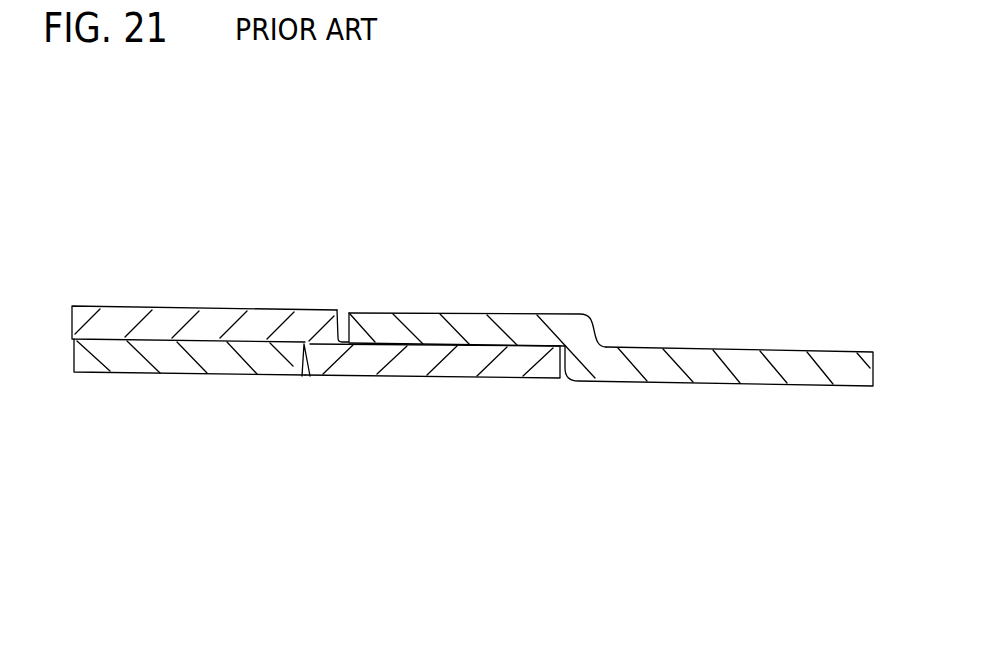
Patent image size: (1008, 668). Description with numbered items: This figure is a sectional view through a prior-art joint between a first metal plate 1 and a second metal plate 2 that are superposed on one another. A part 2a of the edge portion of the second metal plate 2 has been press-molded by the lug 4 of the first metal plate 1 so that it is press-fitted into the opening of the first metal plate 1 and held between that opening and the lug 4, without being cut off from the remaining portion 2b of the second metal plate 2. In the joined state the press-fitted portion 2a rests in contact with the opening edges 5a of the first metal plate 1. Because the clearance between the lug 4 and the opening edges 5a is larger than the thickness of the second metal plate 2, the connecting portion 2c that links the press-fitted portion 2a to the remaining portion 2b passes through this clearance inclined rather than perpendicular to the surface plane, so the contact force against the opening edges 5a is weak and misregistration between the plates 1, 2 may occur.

The first metal plate 1 is at (742, 340).
The second metal plate 2 is at (272, 305).
The press-fitted portion 2a is at (455, 372).
The remaining portion 2b is at (108, 322).
The connecting portion 2c is at (322, 342).
The lug 4 is at (448, 310).
The opening edges 5a is at (305, 377).